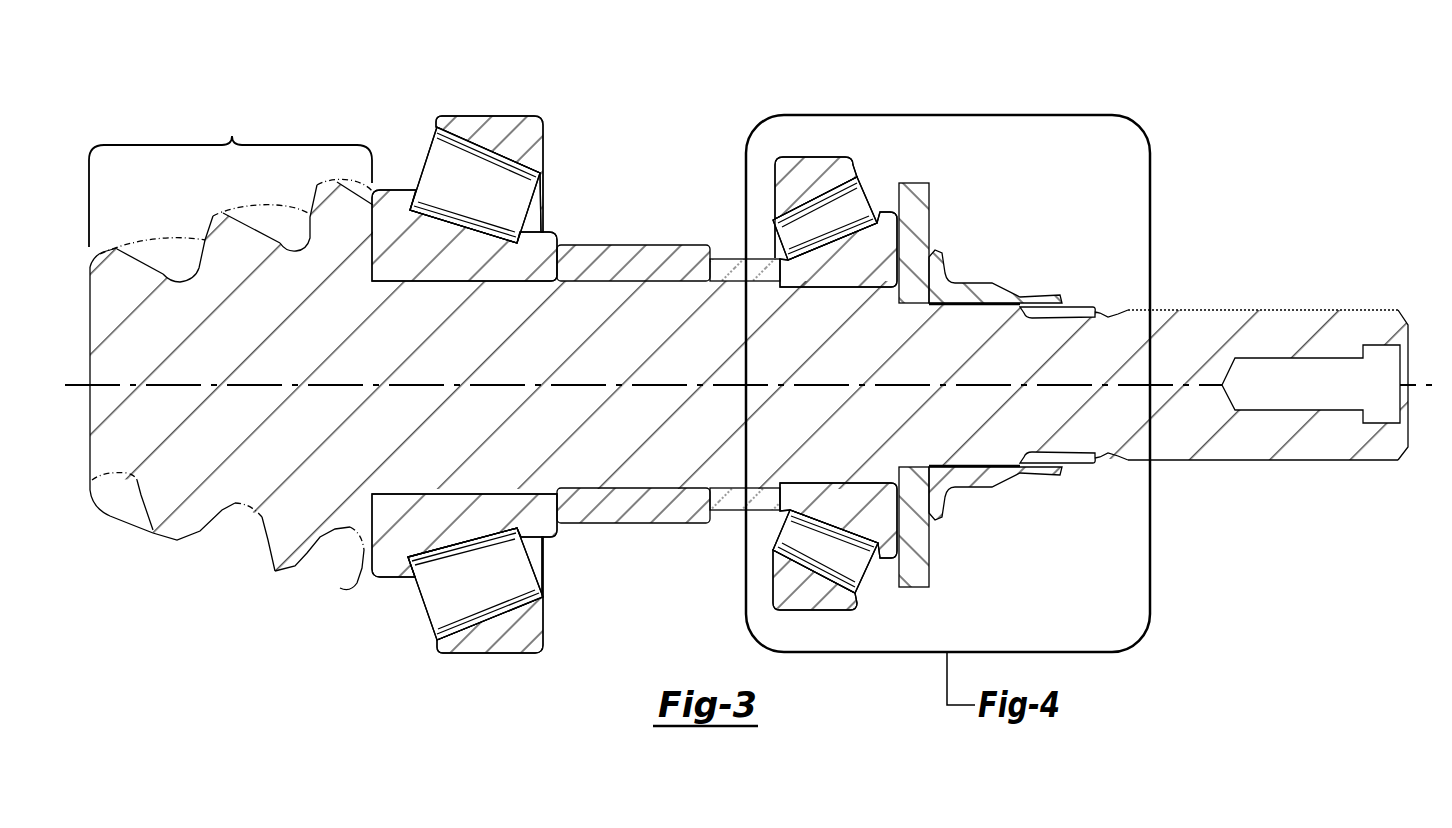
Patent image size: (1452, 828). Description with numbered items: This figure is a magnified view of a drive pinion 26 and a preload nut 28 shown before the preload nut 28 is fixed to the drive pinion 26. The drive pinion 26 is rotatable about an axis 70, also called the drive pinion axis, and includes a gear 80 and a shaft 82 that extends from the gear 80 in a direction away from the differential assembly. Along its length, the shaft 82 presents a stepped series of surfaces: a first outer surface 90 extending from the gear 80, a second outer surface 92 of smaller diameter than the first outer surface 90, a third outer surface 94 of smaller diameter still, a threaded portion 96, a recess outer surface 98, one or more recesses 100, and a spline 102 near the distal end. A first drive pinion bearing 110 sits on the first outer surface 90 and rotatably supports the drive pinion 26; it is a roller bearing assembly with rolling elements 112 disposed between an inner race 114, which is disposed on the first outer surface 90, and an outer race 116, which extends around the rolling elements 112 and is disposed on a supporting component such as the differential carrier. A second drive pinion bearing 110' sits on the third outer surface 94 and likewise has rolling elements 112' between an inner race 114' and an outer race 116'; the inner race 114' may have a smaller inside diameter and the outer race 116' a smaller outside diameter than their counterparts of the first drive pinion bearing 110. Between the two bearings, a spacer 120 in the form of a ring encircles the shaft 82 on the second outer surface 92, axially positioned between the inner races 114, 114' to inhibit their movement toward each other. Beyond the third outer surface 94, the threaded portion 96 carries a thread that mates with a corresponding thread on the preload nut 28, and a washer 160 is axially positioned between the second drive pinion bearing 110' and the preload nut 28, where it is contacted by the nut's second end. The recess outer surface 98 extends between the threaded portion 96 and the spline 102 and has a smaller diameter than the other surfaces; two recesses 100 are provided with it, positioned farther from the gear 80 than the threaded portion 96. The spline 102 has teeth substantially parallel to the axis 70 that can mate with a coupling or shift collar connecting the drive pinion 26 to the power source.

The drive pinion 26 is at (232, 578).
The axis 70 is at (1420, 385).
The gear 80 is at (231, 195).
The shaft 82 is at (440, 365).
The first outer surface 90 is at (432, 503).
The second outer surface 92 is at (618, 498).
The third outer surface 94 is at (852, 490).
The threaded portion 96 is at (965, 470).
The recess outer surface 98 is at (1088, 462).
The recess 100 is at (1068, 320).
The spline 102 is at (1232, 462).
The first drive pinion bearing 110 is at (464, 335).
The rolling elements 112 is at (508, 379).
The inner race 114 is at (490, 220).
The outer race 116 is at (522, 364).
The second drive pinion bearing 110' is at (801, 314).
The rolling elements 112' is at (780, 373).
The inner race 114' is at (790, 241).
The outer race 116' is at (770, 360).
The spacer 120 is at (731, 528).
The washer 160 is at (930, 553).
The preload nut 28 is at (978, 283).